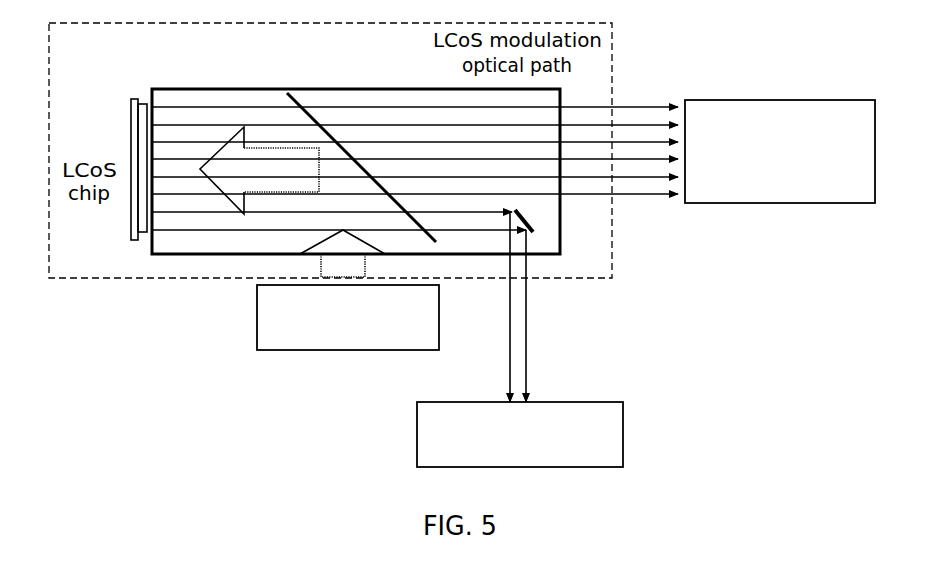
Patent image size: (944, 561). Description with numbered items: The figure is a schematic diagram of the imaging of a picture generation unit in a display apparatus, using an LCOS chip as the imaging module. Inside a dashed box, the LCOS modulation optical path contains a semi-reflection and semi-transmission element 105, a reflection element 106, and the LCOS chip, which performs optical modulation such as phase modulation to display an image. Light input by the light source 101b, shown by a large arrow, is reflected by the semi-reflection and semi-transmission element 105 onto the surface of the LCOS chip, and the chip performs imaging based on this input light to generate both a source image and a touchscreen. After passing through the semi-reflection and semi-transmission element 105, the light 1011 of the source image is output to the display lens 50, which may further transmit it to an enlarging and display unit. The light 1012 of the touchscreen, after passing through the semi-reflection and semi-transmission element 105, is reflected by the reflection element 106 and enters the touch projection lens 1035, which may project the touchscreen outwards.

The light of the source image 1011 is at (242, 107).
The light of the touchscreen 1012 is at (225, 232).
The semi-reflection and semi-transmission element 105 is at (317, 110).
The reflection element 106 is at (533, 213).
The light source 101b is at (348, 317).
The display lens 50 is at (780, 151).
The touch projection lens 1035 is at (520, 434).